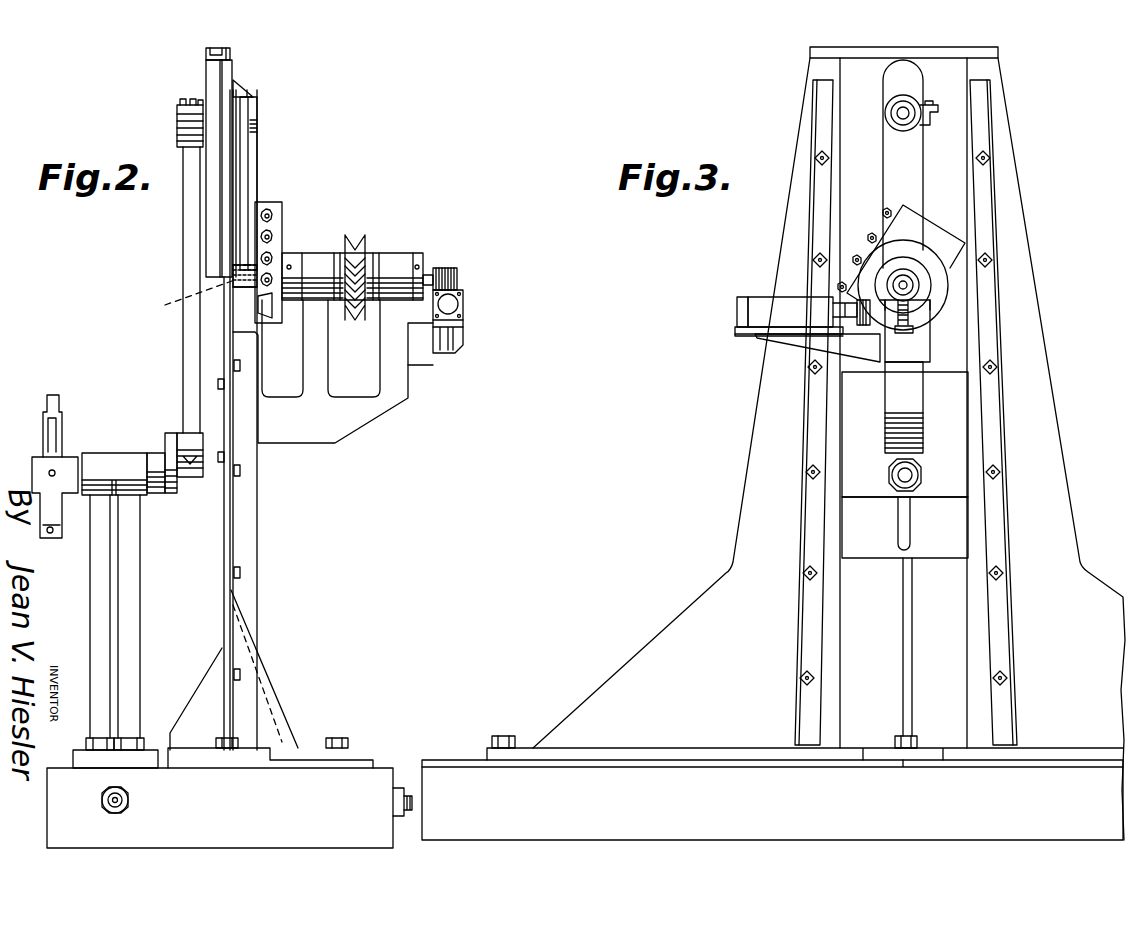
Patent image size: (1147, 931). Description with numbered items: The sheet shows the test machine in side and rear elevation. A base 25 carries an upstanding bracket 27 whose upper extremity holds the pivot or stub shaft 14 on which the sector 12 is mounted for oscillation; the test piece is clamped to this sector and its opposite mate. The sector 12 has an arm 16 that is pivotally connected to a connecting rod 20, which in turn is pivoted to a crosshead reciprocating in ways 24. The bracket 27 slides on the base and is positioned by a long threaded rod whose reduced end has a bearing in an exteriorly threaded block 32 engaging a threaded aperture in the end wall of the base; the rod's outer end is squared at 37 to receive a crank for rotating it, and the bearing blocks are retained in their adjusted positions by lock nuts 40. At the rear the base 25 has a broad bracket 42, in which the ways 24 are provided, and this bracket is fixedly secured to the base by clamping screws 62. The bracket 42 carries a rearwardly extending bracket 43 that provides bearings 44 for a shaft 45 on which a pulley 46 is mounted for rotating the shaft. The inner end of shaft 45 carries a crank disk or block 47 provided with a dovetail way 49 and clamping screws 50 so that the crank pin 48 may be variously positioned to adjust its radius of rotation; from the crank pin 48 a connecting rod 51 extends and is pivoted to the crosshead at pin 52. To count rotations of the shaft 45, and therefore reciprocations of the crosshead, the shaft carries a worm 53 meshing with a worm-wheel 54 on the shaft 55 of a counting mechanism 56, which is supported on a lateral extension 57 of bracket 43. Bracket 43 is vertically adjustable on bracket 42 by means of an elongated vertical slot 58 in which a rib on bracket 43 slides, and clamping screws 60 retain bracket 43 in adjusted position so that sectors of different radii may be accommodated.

In FIG. 2, the sector 12 is at (65, 433).
In FIG. 2, the pivot or stub shaft 14 is at (156, 455).
In FIG. 2, the arm 16 is at (172, 433).
In FIG. 2, the connecting rod 20 is at (185, 355).
In FIG. 2, the ways 24 is at (212, 90).
In FIG. 2, the base 25 is at (220, 798).
In FIG. 3, the base 25 is at (772, 794).
In FIG. 2, the upstanding bracket 27 is at (134, 625).
In FIG. 2, the exteriorly threaded block 32 is at (407, 794).
In FIG. 2, the squared portion 37 is at (128, 806).
In FIG. 2, the lock nuts 40 is at (129, 797).
In FIG. 2, the rear bracket 42 is at (240, 540).
In FIG. 3, the rear bracket 42 is at (690, 620).
In FIG. 2, the rearwardly extending bracket 43 is at (343, 413).
In FIG. 2, the bearings 44 is at (312, 258).
In FIG. 2, the shaft 45 is at (430, 271).
In FIG. 2, the pulley 46 is at (357, 255).
In FIG. 3, the pulley 46 is at (940, 292).
In FIG. 2, the crank disk or block 47 is at (276, 235).
In FIG. 3, the crank disk or block 47 is at (918, 228).
In FIG. 2, the crank pin 48 is at (198, 301).
In FIG. 2, the dovetail way 49 is at (265, 318).
In FIG. 2, the clamping screws 50 is at (270, 207).
In FIG. 3, the clamping screws 50 is at (858, 258).
In FIG. 2, the connecting rod 51 is at (243, 157).
In FIG. 3, the connecting rod 51 is at (910, 165).
In FIG. 3, the pivot pin 52 is at (918, 108).
In FIG. 2, the worm 53 is at (456, 271).
In FIG. 3, the worm 53 is at (908, 275).
In FIG. 3, the worm-wheel 54 is at (905, 332).
In FIG. 3, the shaft 55 is at (877, 322).
In FIG. 2, the counting mechanism 56 is at (463, 302).
In FIG. 3, the counting mechanism 56 is at (780, 310).
In FIG. 2, the lateral extension 57 is at (440, 350).
In FIG. 3, the lateral extension 57 is at (793, 340).
In FIG. 3, the elongated vertical slot 58 is at (912, 537).
In FIG. 3, the clamping screws 60 is at (920, 472).
In FIG. 2, the clamping screws 62 is at (336, 738).
In FIG. 3, the clamping screws 62 is at (505, 736).